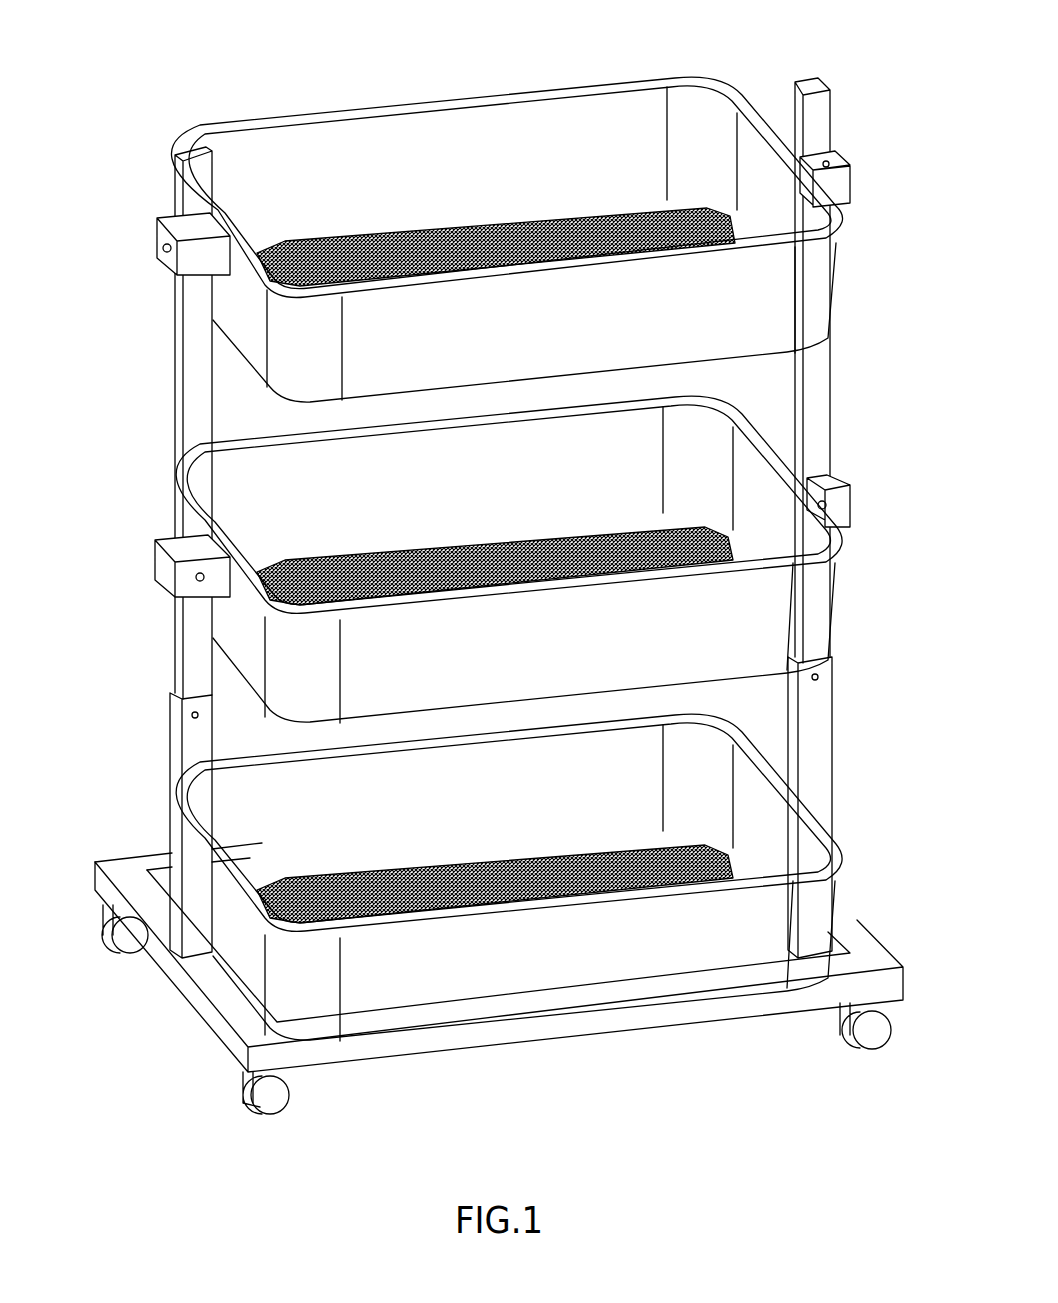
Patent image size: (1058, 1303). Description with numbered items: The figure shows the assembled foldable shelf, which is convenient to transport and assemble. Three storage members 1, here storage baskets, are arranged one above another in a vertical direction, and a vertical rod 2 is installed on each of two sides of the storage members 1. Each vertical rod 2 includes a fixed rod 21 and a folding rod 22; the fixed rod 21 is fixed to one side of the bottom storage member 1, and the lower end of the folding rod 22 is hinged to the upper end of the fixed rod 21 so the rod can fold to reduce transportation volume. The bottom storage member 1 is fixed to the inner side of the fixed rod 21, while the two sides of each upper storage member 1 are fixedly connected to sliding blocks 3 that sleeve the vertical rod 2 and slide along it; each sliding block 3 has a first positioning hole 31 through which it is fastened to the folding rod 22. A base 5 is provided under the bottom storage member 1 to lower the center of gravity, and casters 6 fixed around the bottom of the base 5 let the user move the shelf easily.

The storage member 1 is at (422, 148).
The vertical rod 2 is at (499, 518).
The fixed rod 21 is at (187, 753).
The folding rod 22 is at (180, 340).
The sliding block 3 is at (167, 218).
The first positioning hole 31 is at (165, 246).
The base 5 is at (534, 1023).
The caster 6 is at (127, 952).